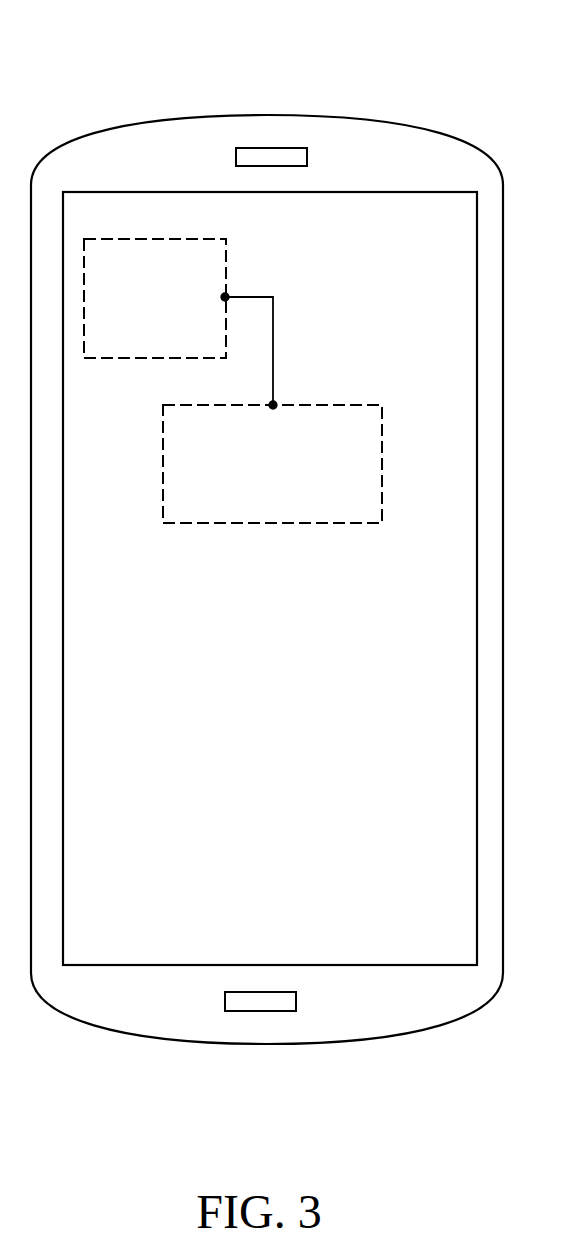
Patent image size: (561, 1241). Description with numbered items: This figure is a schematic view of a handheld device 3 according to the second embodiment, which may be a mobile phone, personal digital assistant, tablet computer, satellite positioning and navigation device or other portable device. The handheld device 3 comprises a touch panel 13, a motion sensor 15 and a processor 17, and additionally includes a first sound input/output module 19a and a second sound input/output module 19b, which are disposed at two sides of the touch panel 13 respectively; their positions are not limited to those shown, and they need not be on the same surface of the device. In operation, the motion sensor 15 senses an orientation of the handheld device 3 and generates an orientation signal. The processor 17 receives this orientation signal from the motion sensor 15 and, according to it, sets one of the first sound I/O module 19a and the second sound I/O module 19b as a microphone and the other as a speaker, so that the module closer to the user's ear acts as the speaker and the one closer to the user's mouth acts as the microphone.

The handheld device 3 is at (375, 83).
The touch panel 13 is at (252, 627).
The motion sensor 15 is at (283, 512).
The processor 17 is at (169, 346).
The first sound input/output (I/O) module 19a is at (297, 166).
The second sound input/output (I/O) module 19b is at (283, 992).